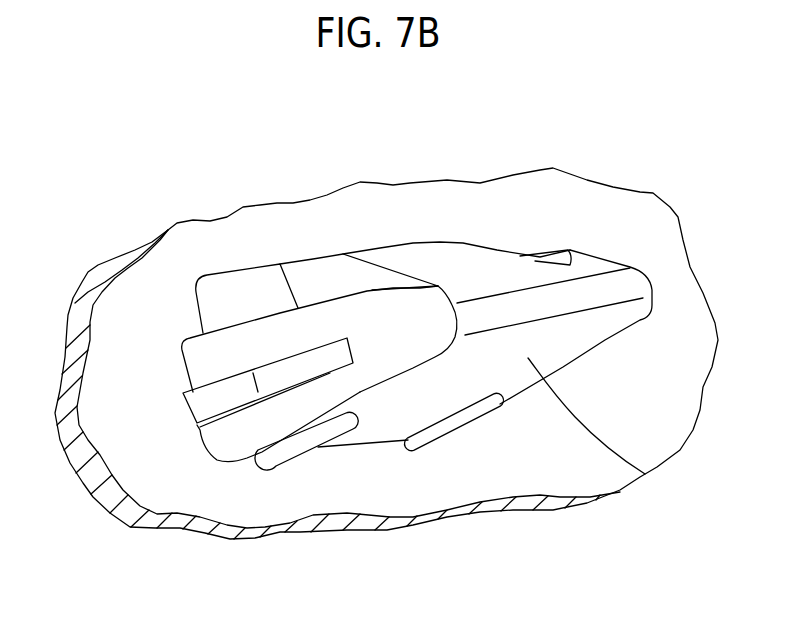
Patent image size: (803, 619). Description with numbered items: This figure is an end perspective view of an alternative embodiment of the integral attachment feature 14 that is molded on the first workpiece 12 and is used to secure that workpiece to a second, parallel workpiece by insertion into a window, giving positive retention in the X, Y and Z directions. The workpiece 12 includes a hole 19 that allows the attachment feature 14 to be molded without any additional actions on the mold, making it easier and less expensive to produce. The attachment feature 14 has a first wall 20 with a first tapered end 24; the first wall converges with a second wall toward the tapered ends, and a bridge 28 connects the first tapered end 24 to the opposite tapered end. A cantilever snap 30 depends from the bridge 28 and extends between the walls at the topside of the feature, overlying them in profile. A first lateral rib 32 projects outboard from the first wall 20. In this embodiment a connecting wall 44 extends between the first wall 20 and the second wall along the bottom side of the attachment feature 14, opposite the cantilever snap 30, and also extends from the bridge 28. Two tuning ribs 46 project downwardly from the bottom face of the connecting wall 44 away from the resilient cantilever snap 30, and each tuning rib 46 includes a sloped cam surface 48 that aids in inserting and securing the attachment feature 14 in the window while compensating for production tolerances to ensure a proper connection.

The first workpiece 12 is at (150, 450).
The integral attachment feature 14 is at (189, 278).
The hole 19 is at (247, 277).
The first wall 20 is at (266, 425).
The first tapered end 24 is at (437, 322).
The bridge 28 is at (587, 293).
The cantilever snap 30 is at (344, 256).
The first lateral rib 32 is at (213, 398).
The connecting wall 44 is at (645, 474).
The tuning rib 46 is at (288, 453).
The sloped cam surface 48 is at (338, 430).